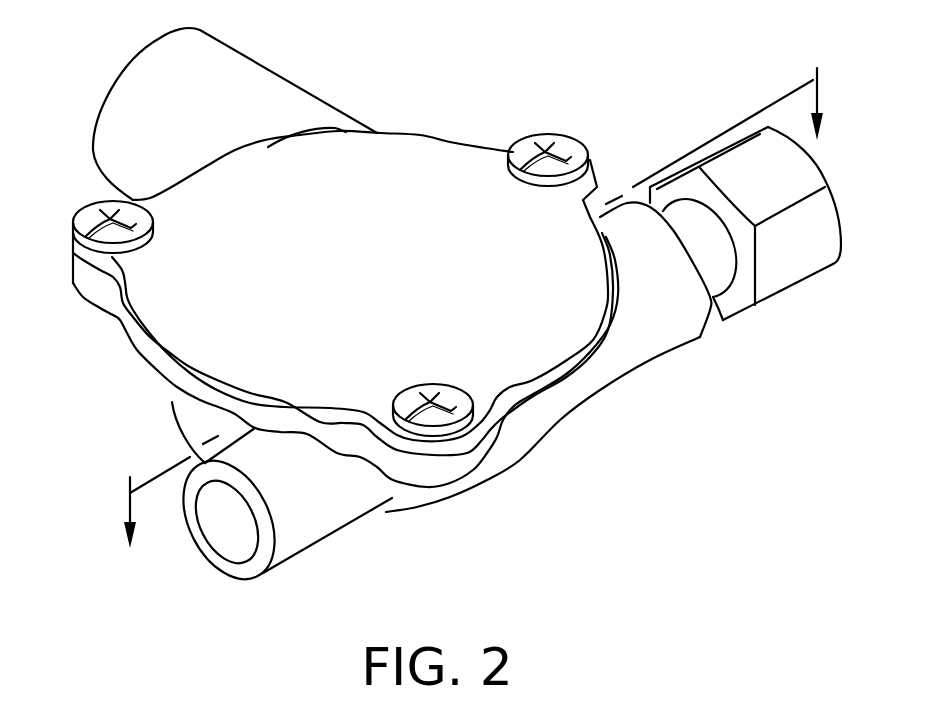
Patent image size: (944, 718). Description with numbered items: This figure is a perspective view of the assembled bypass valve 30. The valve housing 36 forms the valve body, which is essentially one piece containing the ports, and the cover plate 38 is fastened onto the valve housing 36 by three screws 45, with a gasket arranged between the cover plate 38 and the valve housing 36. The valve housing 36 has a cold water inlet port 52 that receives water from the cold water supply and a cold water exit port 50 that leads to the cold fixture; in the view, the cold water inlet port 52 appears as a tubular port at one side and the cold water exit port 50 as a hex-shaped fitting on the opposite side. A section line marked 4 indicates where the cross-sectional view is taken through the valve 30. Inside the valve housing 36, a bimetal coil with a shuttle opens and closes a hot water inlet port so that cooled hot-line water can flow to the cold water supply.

The valve 30 is at (447, 112).
The valve housing 36 is at (591, 420).
The cover plate 38 is at (190, 338).
The screws 45 is at (90, 216).
The cold water exit port 50 is at (790, 317).
The cold water inlet port 52 is at (295, 518).
The section line 4- 4 is at (473, 293).